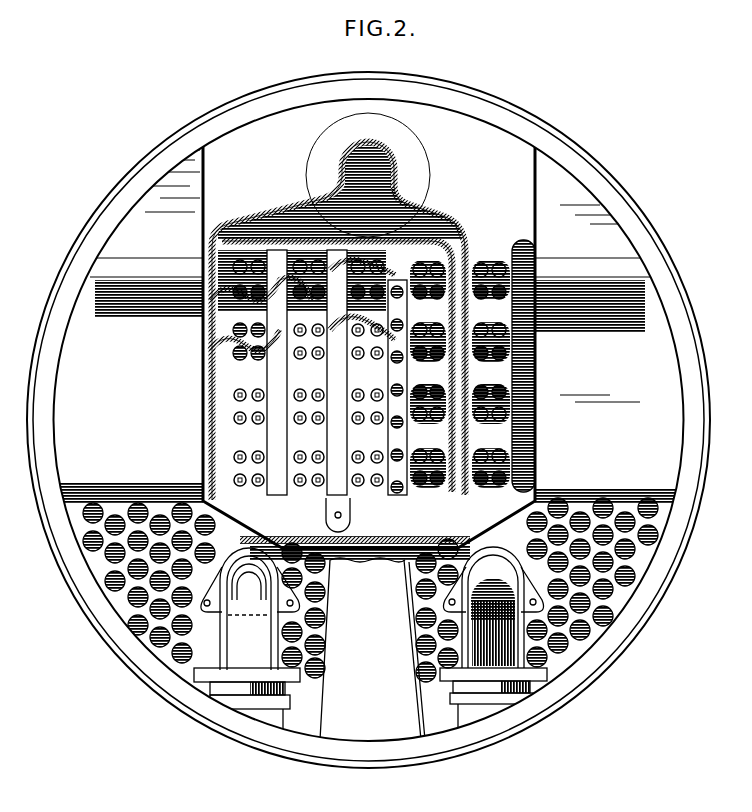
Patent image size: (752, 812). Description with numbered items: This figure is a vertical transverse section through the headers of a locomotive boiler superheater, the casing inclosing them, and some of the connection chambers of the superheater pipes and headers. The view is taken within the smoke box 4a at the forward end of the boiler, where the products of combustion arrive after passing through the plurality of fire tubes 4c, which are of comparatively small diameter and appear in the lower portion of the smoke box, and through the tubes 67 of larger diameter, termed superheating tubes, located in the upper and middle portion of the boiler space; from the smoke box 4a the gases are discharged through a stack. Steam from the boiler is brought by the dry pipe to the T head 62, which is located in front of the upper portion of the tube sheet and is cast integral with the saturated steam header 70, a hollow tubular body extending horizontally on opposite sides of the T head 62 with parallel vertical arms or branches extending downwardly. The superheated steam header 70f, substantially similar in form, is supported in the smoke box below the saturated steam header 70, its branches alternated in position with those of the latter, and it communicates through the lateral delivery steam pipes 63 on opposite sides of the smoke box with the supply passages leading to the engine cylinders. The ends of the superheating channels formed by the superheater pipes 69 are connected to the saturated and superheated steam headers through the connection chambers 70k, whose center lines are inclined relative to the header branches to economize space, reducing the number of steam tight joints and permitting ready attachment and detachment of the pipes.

The smoke box 4a is at (60, 282).
The fire tubes 4c is at (138, 510).
The T head 62 is at (432, 143).
The steam pipes 63 is at (370, 646).
The superheating tubes 67 is at (493, 262).
The superheater pipes 69 is at (539, 294).
The saturated steam header 70 is at (263, 222).
The superheated steam header 70f is at (548, 338).
The connection chambers 70k is at (208, 305).